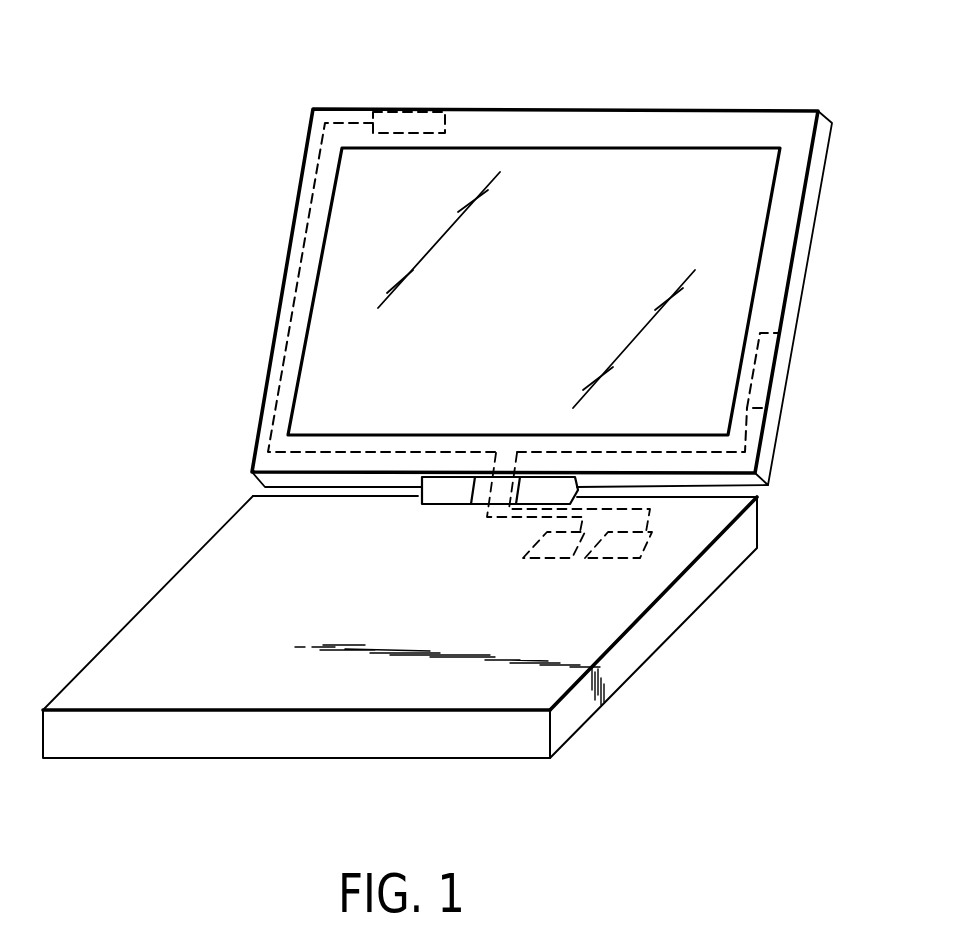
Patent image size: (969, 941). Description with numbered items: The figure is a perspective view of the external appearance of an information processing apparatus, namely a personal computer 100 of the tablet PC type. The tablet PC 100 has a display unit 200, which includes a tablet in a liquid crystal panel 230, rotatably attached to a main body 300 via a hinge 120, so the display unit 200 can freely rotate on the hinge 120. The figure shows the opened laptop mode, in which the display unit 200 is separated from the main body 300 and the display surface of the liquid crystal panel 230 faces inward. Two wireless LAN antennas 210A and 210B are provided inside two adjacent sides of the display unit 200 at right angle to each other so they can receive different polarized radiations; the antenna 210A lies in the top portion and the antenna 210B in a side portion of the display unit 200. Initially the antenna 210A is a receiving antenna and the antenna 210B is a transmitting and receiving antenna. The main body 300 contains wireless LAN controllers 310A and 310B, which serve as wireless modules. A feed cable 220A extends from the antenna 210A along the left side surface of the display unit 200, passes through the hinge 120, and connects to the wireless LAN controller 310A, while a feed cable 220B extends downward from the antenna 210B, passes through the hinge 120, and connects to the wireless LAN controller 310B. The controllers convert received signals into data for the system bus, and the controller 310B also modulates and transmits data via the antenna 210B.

The personal computer 100 is at (813, 99).
The display unit 200 is at (262, 281).
The antenna 210A is at (412, 122).
The antenna 210B is at (785, 343).
The feed cable 220A is at (312, 178).
The feed cable 220B is at (768, 428).
The liquid crystal panel 230 is at (750, 212).
The hinge 120 is at (500, 490).
The main body 300 is at (170, 545).
The wireless LAN controller 310A is at (567, 553).
The wireless LAN controller 310B is at (640, 545).